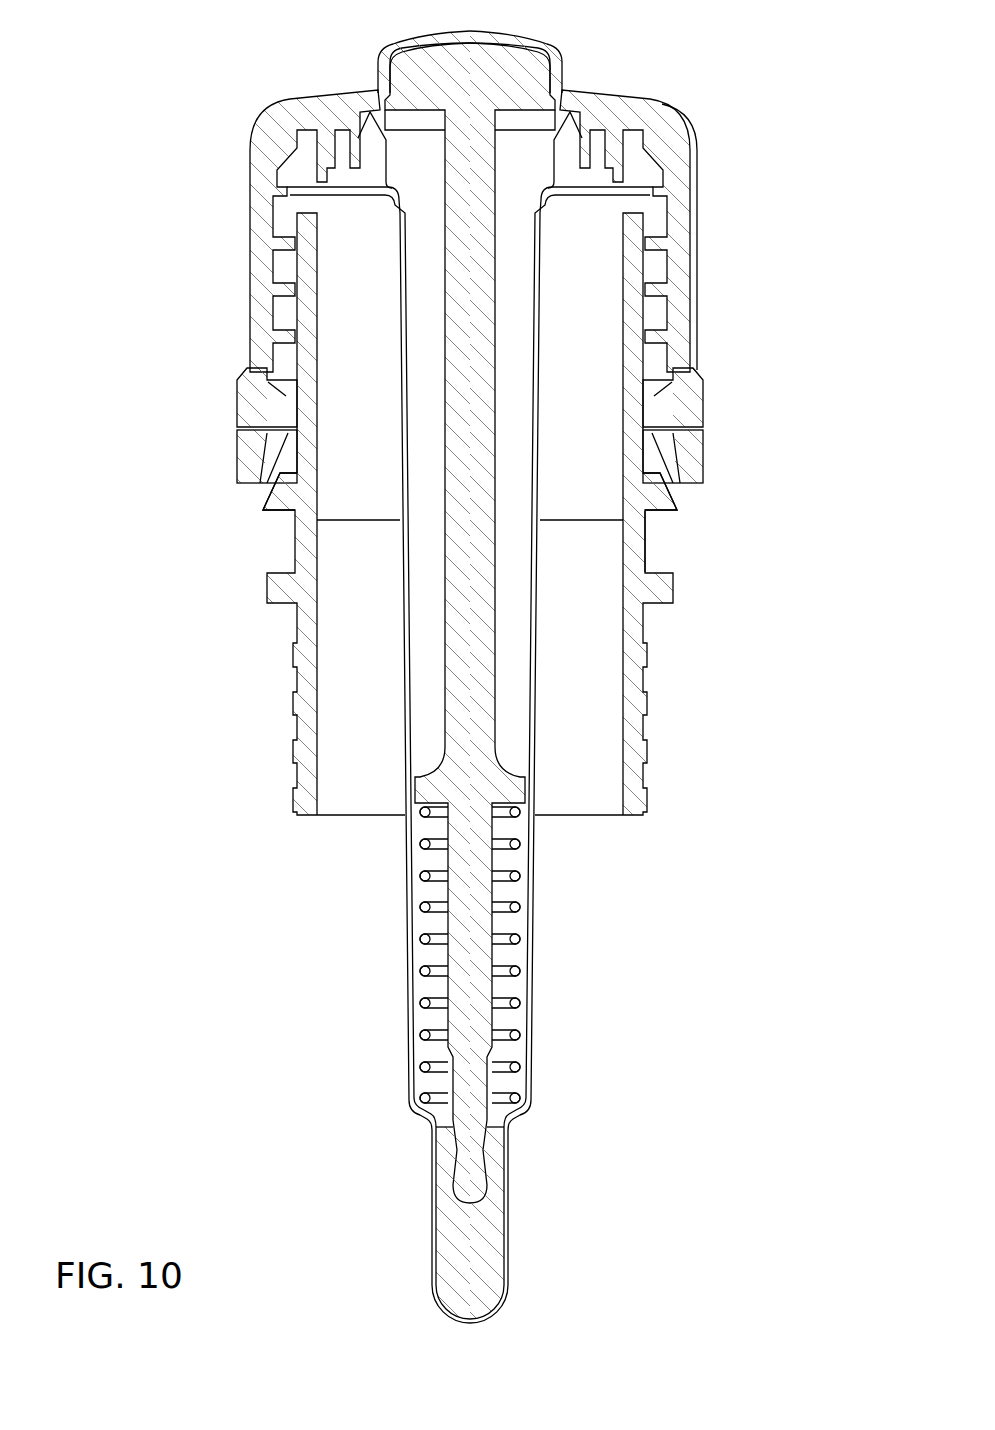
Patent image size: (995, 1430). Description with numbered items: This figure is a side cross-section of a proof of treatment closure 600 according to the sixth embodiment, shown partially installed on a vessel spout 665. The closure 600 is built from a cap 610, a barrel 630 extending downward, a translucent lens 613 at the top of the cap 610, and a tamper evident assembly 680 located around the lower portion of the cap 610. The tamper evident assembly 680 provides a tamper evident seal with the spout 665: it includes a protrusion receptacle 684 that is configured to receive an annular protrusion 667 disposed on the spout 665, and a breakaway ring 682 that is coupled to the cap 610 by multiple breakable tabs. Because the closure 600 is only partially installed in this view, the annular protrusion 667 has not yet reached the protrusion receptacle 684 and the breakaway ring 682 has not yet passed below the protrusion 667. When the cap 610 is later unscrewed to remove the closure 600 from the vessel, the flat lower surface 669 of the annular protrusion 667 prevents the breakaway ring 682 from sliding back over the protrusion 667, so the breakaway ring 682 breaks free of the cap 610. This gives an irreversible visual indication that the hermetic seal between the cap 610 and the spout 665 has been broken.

The proof of treatment closure 600 is at (813, 138).
The translucent lens 613 is at (503, 32).
The cap 610 is at (698, 288).
The tamper evident assembly 680 is at (715, 378).
The protrusion receptacle 684 is at (248, 376).
The breakaway ring 682 is at (237, 455).
The annular protrusion 667 is at (264, 495).
The flat lower surface 669 is at (658, 513).
The vessel spout 665 is at (647, 650).
The barrel 630 is at (533, 972).